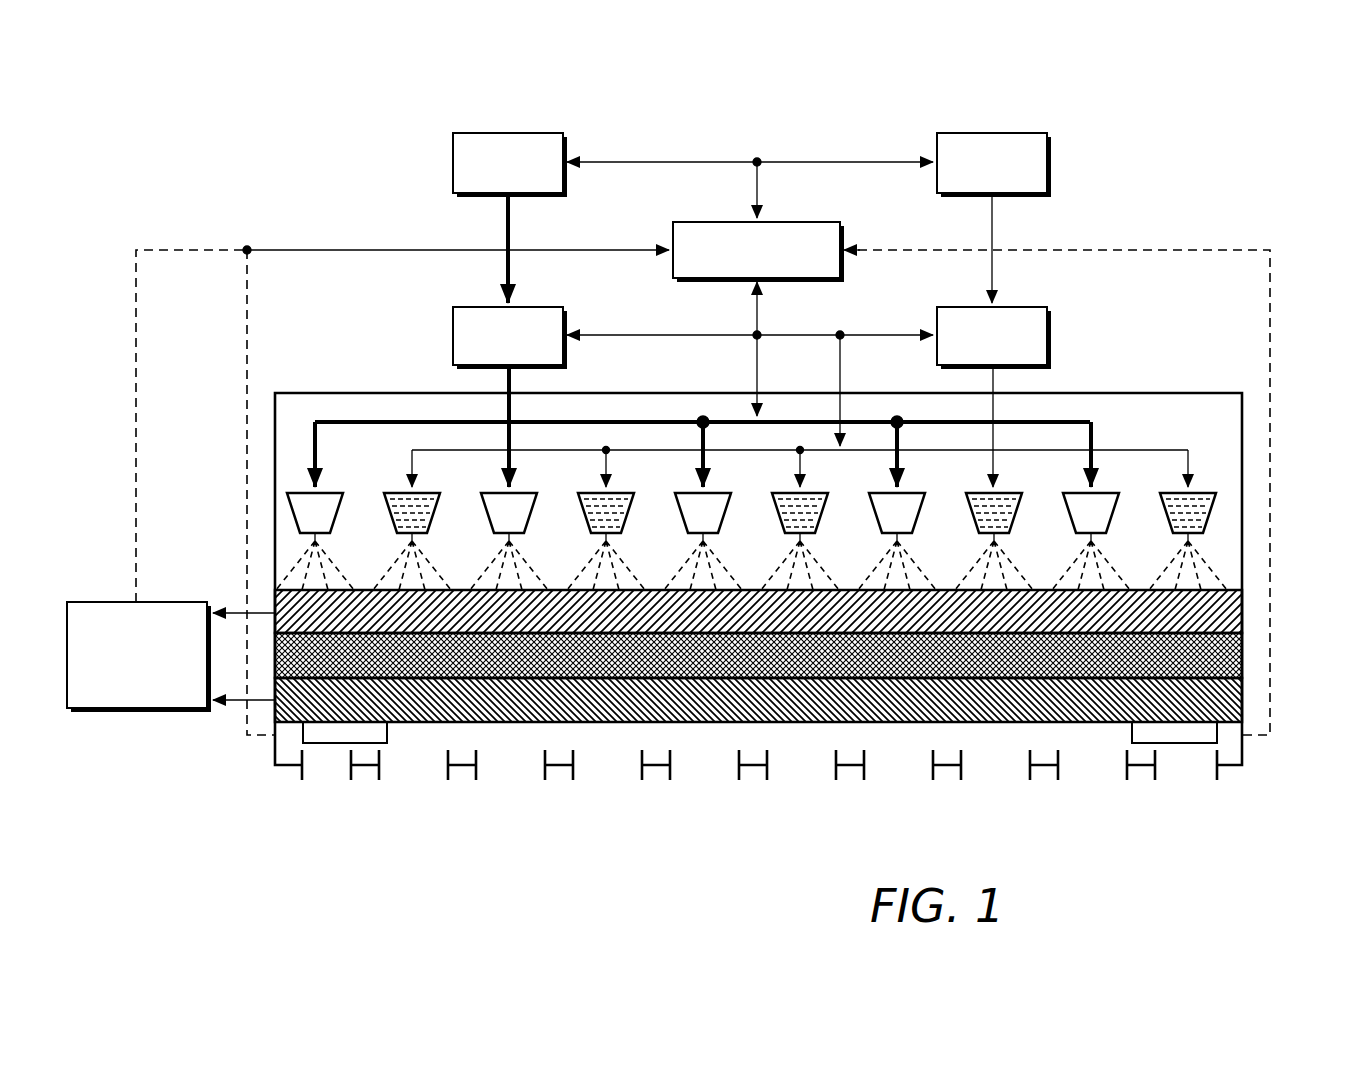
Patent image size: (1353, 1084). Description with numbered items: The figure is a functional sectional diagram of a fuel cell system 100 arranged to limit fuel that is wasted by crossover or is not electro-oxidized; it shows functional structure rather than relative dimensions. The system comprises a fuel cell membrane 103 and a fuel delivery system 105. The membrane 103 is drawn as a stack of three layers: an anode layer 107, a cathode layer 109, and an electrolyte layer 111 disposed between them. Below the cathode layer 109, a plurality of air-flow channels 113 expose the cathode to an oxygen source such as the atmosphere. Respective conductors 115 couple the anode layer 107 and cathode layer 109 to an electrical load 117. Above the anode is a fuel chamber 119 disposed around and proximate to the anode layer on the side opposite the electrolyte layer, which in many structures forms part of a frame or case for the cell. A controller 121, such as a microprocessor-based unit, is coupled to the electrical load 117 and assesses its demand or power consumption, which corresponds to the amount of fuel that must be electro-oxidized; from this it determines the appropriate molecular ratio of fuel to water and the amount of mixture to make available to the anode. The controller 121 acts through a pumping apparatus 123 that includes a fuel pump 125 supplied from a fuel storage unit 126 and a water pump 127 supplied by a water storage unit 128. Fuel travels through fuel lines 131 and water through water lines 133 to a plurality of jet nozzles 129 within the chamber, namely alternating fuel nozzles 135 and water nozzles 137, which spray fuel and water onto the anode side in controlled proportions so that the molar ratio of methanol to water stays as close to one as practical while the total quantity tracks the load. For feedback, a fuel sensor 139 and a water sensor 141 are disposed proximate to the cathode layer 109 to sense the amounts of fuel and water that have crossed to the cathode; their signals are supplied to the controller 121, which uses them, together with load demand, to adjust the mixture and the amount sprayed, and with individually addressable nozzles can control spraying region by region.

The fuel cell system 100 is at (987, 844).
The fuel cell membrane 103 is at (459, 736).
The fuel delivery system 105 is at (1240, 194).
The anode layer 107 is at (1243, 607).
The cathode layer 109 is at (1243, 703).
The electrolyte layer 111 is at (1243, 657).
The air-flow channels 113 is at (797, 777).
The conductors 115 is at (242, 608).
The electrical load 117 is at (66, 602).
The fuel chamber 119 is at (275, 392).
The controller 121 is at (673, 221).
The pumping apparatus 123 is at (416, 304).
The fuel pump 125 is at (565, 308).
The fuel storage unit 126 is at (564, 134).
The water pump 127 is at (1048, 309).
The water storage unit 128 is at (937, 134).
The jet nozzles 129 is at (238, 489).
The fuel lines 131 is at (1091, 420).
The water lines 133 is at (1190, 449).
The fuel nozzles 135 is at (330, 494).
The water nozzles 137 is at (1205, 500).
The fuel sensor 139 is at (1177, 755).
The water sensor 141 is at (327, 752).